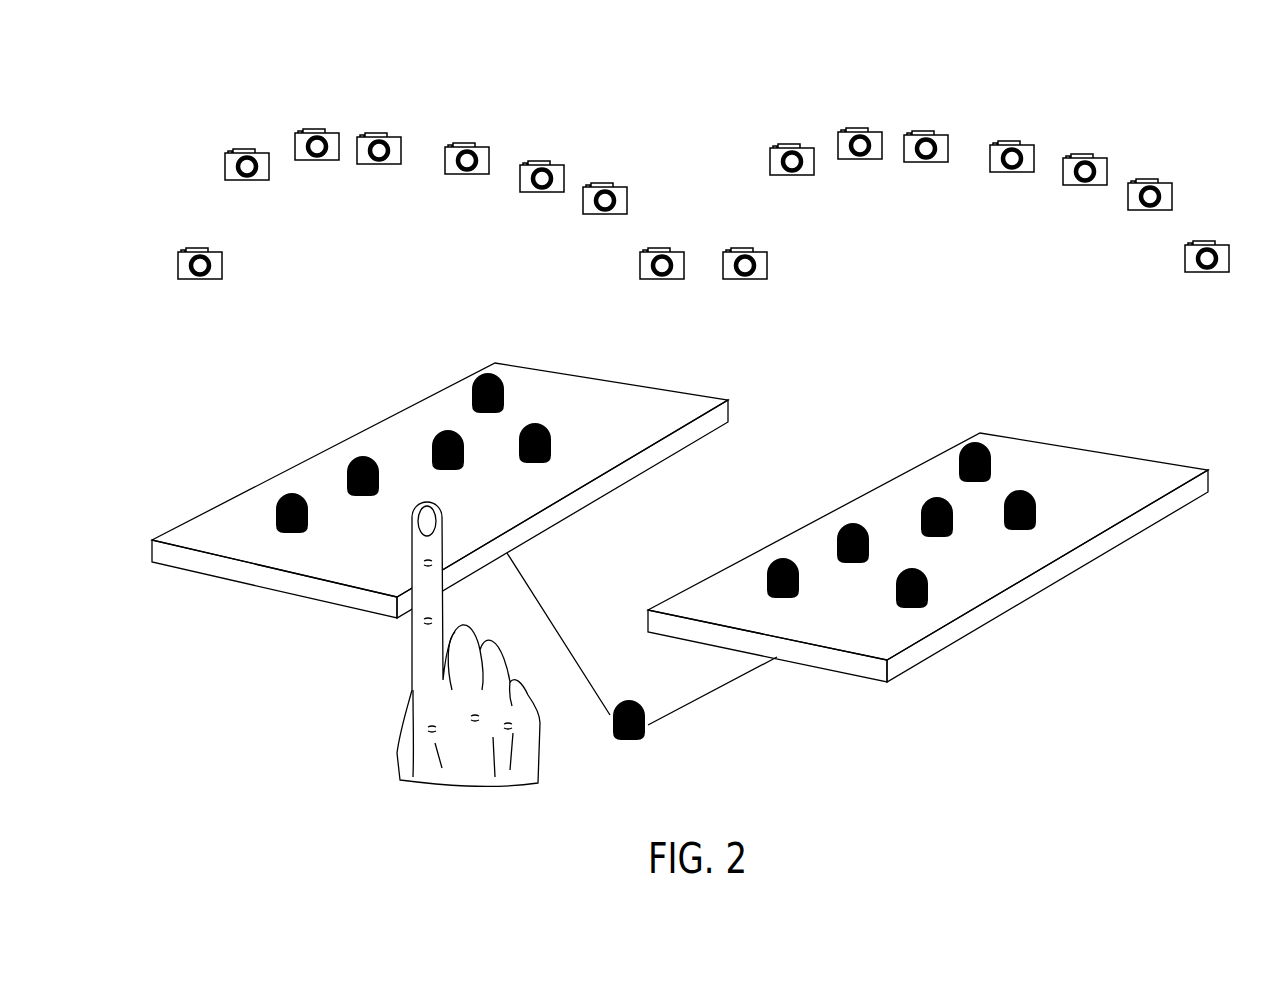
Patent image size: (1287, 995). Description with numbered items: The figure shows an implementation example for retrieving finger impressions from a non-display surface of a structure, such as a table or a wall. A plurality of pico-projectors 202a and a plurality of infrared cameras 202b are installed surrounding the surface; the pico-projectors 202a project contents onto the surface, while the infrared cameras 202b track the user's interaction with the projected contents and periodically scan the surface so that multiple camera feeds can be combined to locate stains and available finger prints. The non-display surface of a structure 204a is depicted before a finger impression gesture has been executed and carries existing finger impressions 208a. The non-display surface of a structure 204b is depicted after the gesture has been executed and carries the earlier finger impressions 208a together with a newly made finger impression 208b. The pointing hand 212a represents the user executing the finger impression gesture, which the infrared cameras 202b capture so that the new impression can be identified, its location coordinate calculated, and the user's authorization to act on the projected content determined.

The pico-projectors 202a is at (348, 113).
The infrared cameras 202b is at (980, 113).
The non-display surface of a structure 204a is at (223, 525).
The non-display surface of a structure 204b is at (977, 615).
The finger impressions 208a is at (374, 382).
The finger impression 208b is at (913, 607).
The hand 212a is at (445, 604).